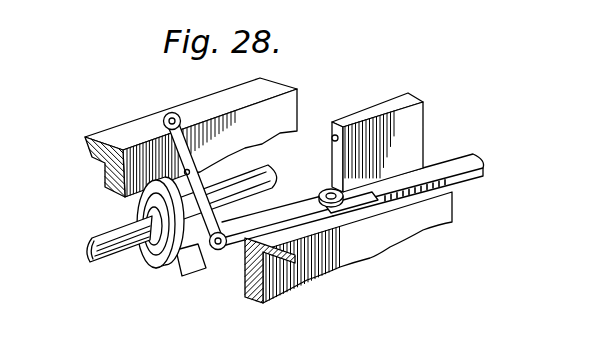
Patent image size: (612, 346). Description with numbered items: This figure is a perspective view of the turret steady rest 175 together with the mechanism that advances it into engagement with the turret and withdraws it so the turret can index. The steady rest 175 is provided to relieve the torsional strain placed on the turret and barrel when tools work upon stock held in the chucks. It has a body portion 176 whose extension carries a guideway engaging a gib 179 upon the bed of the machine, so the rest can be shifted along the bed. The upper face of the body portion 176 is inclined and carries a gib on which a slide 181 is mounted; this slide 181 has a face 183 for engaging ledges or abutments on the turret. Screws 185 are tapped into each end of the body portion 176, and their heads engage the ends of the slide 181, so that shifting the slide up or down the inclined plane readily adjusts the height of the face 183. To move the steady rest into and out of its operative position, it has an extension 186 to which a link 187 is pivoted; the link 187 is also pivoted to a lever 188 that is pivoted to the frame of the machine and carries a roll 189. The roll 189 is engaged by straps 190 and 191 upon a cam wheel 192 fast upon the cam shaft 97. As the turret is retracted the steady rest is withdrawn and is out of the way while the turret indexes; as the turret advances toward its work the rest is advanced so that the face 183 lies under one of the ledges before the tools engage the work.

The cam shaft 97 is at (89, 257).
The steady rest 175 is at (340, 133).
The body portion 176 is at (420, 137).
The gib 179 is at (358, 214).
The slide 181 is at (410, 116).
The face 183 is at (389, 106).
The screws 185 is at (331, 140).
The extension 186 is at (328, 191).
The link 187 is at (276, 226).
The lever 188 is at (207, 250).
The roll 189 is at (166, 165).
The strap 190 is at (180, 262).
The strap 191 is at (143, 202).
The cam wheel 192 is at (152, 256).